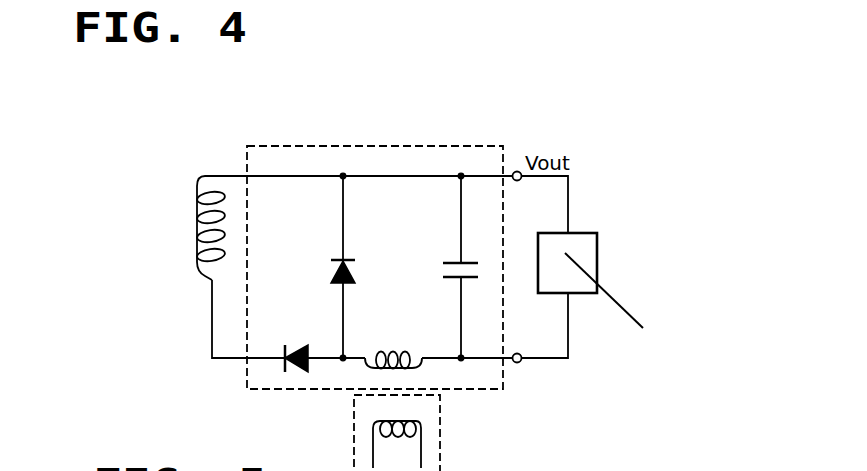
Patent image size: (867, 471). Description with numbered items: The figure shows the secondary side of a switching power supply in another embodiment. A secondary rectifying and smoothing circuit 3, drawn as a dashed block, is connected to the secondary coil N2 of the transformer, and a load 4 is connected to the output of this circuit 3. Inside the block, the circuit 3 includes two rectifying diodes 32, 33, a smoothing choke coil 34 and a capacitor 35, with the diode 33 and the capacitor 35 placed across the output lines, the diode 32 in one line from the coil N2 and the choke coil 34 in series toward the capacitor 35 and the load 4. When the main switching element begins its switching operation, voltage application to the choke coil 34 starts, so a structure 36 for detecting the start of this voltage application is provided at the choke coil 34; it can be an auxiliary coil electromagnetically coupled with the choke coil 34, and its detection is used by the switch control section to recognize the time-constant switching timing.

The secondary rectifying and smoothing circuit 3 is at (398, 145).
The secondary coil N2 is at (197, 247).
The rectifying diode 32 is at (300, 345).
The rectifying diode 33 is at (356, 278).
The smoothing choke coil 34 is at (397, 352).
The capacitor 35 is at (452, 262).
The load 4 is at (580, 235).
The structure for detecting the start of voltage application of the choke coil 36 is at (440, 431).